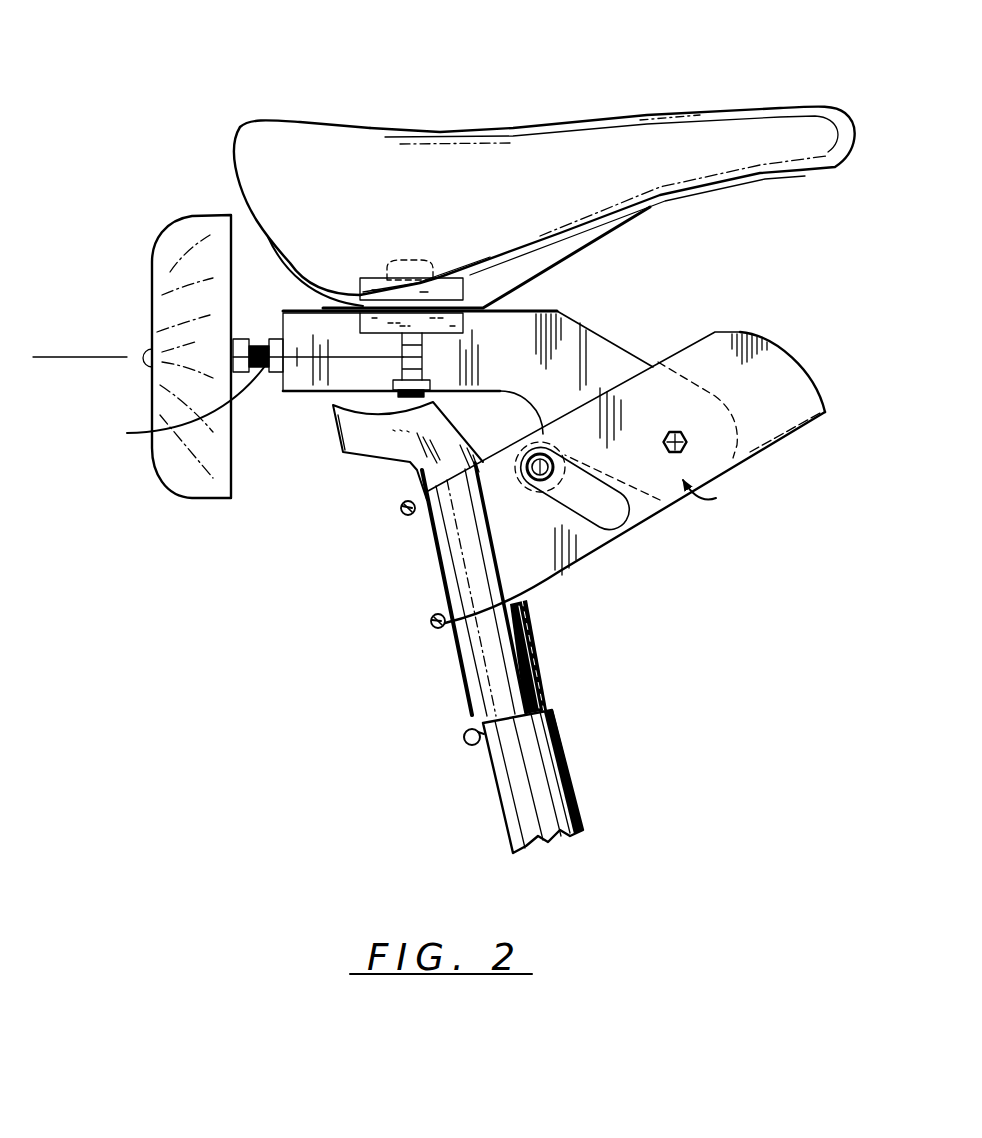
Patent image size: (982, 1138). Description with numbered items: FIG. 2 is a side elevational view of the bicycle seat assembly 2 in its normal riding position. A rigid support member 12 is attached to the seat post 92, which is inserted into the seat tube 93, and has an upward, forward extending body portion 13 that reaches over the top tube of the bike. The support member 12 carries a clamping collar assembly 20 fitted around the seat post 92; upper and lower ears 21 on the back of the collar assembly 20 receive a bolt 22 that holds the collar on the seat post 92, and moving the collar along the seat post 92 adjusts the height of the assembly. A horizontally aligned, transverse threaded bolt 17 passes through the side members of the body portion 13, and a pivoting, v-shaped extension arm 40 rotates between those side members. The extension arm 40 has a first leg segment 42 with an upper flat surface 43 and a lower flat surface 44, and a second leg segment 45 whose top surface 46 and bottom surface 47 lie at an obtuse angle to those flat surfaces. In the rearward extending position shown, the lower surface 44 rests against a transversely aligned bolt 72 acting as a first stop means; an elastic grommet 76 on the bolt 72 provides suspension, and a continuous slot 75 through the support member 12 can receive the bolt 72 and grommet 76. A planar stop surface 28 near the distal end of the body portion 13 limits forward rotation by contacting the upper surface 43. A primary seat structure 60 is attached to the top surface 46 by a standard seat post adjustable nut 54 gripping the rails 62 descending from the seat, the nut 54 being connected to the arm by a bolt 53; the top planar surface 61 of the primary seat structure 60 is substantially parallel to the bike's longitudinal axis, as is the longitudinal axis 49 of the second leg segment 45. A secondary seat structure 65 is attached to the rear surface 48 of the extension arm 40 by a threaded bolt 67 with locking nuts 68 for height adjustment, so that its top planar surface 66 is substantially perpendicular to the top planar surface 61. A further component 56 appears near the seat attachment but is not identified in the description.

The bicycle seat assembly 2 is at (262, 57).
The rigid support member 12 is at (793, 335).
The body portion 13 is at (810, 373).
The threaded bolt 17 is at (687, 443).
The clamping collar assembly 20 is at (425, 565).
The ears 21 is at (400, 507).
The bolt 22 is at (405, 512).
The stop surface 28 is at (790, 437).
The extension arm 40 is at (615, 315).
The first leg segment 42 is at (710, 493).
The upper flat surface 43 is at (627, 347).
The lower flat surface 44 is at (662, 501).
The second leg segment 45 is at (352, 380).
The top surface 46 is at (543, 300).
The bottom surface 47 is at (480, 393).
The rear surface 48 is at (281, 322).
The longitudinal axis 49 is at (78, 357).
The bolt 53 is at (330, 392).
The seat post adjustable nut 54 is at (402, 258).
The clamp plate 56 is at (370, 279).
The primary seat structure 60 is at (643, 140).
The top planar surface 61 is at (268, 122).
The rails 62 is at (600, 238).
The secondary seat structure 65 is at (167, 469).
The top planar surface 66 is at (163, 235).
The threaded bolt 67 is at (177, 406).
The locking nuts 68 is at (270, 351).
The bolt 72 is at (535, 480).
The continuous slot 75 is at (597, 507).
The grommet 76 is at (612, 516).
The seat post 92 is at (548, 675).
The seat tube 93 is at (495, 793).